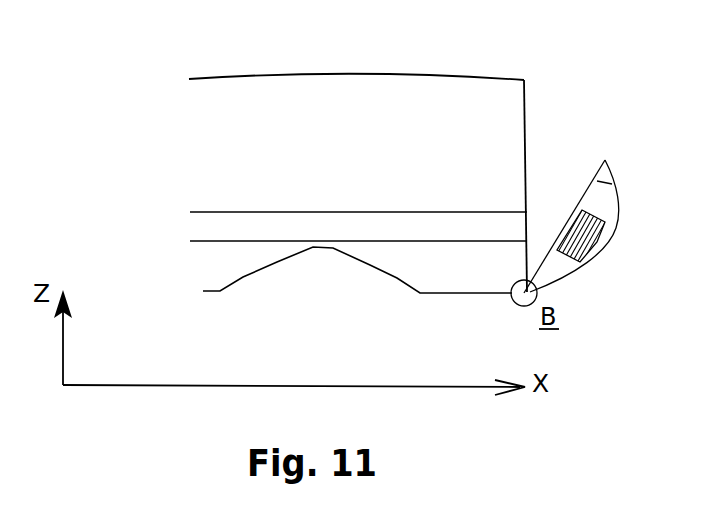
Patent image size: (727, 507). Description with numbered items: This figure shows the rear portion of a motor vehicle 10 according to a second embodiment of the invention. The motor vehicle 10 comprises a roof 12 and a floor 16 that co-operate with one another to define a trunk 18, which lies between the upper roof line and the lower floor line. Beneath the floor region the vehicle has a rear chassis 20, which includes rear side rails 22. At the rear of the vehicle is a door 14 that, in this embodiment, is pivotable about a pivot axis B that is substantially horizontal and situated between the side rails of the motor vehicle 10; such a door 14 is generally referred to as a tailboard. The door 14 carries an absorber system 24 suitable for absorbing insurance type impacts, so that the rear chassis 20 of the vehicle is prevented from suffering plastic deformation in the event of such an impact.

The motor vehicle 10 is at (286, 181).
The roof 12 is at (363, 74).
The door 14 is at (597, 230).
The floor 16 is at (448, 295).
The trunk 18 is at (420, 186).
The rear chassis 20 is at (286, 212).
The rear side rails 22 is at (208, 230).
The absorber system 24 is at (594, 234).